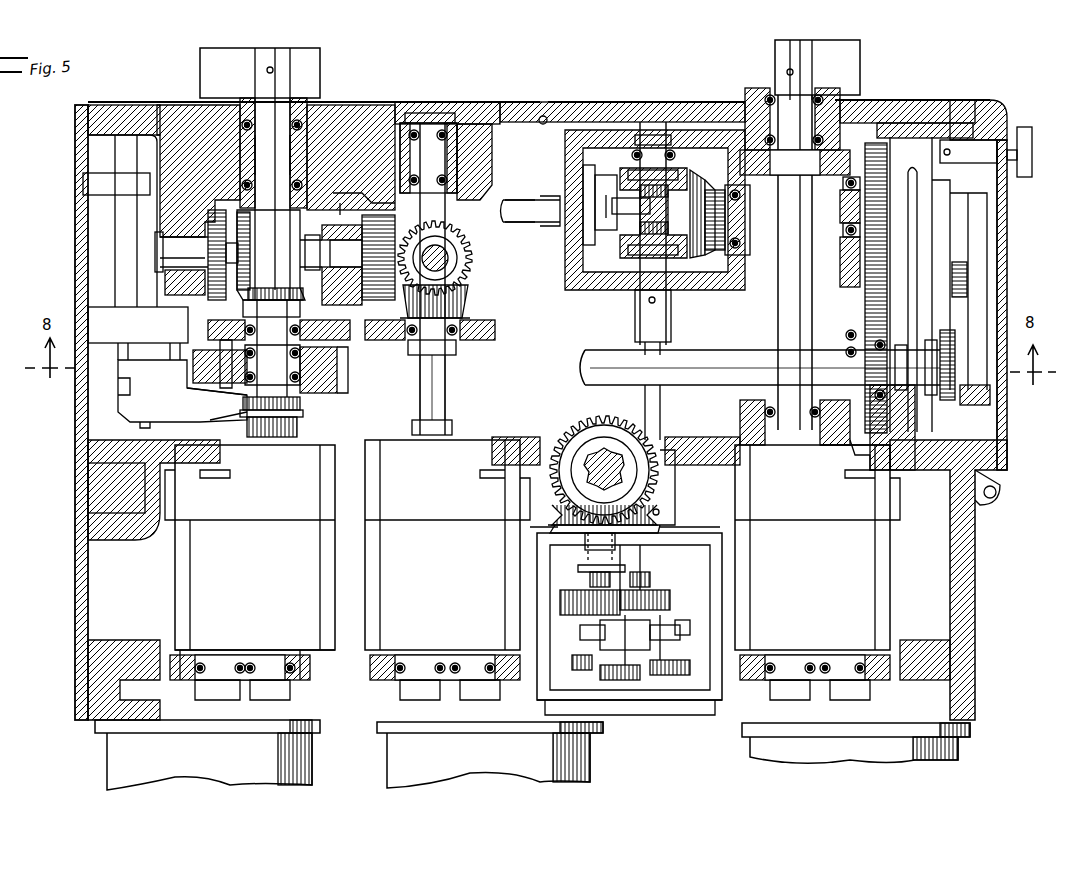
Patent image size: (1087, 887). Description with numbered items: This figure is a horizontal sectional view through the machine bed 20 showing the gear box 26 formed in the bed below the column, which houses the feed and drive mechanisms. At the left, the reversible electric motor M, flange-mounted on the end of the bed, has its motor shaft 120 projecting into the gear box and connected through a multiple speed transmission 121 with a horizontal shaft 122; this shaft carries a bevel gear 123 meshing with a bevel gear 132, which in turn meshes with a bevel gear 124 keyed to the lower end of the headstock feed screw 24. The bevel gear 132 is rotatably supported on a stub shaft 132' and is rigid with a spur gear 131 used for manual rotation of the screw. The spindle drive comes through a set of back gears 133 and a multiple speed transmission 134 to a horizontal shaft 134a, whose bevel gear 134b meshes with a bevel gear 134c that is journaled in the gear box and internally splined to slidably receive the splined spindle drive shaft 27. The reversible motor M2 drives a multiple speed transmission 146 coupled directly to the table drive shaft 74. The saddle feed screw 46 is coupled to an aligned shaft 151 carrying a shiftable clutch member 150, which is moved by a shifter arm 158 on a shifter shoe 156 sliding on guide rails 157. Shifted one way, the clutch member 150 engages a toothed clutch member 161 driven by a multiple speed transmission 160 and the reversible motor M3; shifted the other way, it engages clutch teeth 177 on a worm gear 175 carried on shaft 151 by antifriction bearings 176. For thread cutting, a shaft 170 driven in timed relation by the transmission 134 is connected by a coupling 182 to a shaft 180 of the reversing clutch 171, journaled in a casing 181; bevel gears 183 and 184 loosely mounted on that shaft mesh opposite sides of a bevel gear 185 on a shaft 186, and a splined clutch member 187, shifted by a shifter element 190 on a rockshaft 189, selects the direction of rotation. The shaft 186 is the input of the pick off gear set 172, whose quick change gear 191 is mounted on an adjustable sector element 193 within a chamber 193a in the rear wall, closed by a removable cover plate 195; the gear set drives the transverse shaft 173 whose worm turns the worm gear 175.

The machine bed 20 is at (92, 676).
The feed screw 24 is at (448, 256).
The gear box 26 is at (545, 115).
The splined drive shaft 27 is at (606, 455).
The feed screw 46 is at (290, 68).
The splined drive shaft 74 is at (778, 58).
The motor shaft 120 is at (480, 702).
The multiple speed transmission 121 is at (468, 442).
The horizontal shaft 122 is at (450, 353).
The bevel gear 123 is at (468, 296).
The bevel gear 124 is at (472, 268).
The spur gear 131 is at (362, 204).
The bevel gear 132 is at (362, 237).
The stub shaft 132' is at (245, 255).
The back gears 133 is at (728, 593).
The multiple speed transmission 134 is at (548, 592).
The horizontal shaft 134a is at (600, 550).
The bevel gear 134b is at (555, 512).
The bevel gear 134c is at (580, 432).
The multiple speed transmission 146 is at (890, 512).
The clutch member 150 is at (270, 430).
The shaft 151 is at (258, 312).
The shifter shoe 156 is at (170, 398).
The guide rails 157 is at (172, 345).
The shifter arm 158 is at (235, 418).
The multiple speed transmission 160 is at (178, 560).
The toothed clutch member 161 is at (305, 425).
The shaft 170 is at (645, 342).
The reversing clutch 171 is at (655, 120).
The pick off gear set 172 is at (928, 228).
The transverse shaft 173 is at (582, 368).
The worm gear 175 is at (350, 360).
The antifriction bearings 176 is at (330, 364).
The clutch teeth 177 is at (290, 404).
The shaft 180 is at (660, 170).
The casing 181 is at (585, 148).
The coupling 182 is at (636, 307).
The bevel gear 183 is at (708, 255).
The bevel gear 184 is at (630, 170).
The bevel gear 185 is at (718, 240).
The shaft 186 is at (752, 210).
The clutch member 187 is at (628, 206).
The rockshaft 189 is at (508, 212).
The shifter element 190 is at (590, 235).
The quick change gear 191 is at (965, 292).
The sector element 193 is at (985, 263).
The chamber 193a is at (995, 190).
The cover plate 195 is at (1003, 238).
The reversible electric motor M is at (395, 755).
The reversible electric motor M2 is at (760, 750).
The reversible electric motor M3 is at (105, 753).